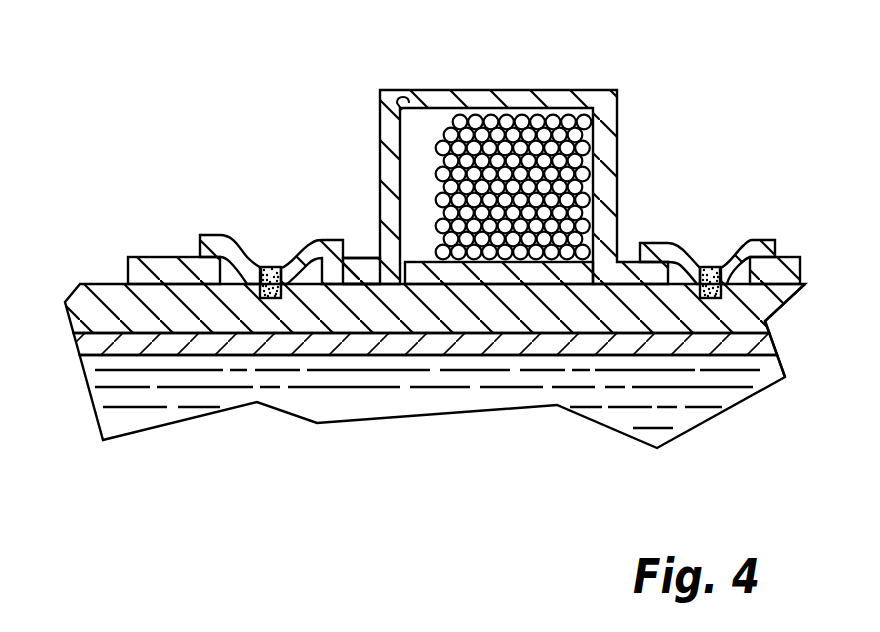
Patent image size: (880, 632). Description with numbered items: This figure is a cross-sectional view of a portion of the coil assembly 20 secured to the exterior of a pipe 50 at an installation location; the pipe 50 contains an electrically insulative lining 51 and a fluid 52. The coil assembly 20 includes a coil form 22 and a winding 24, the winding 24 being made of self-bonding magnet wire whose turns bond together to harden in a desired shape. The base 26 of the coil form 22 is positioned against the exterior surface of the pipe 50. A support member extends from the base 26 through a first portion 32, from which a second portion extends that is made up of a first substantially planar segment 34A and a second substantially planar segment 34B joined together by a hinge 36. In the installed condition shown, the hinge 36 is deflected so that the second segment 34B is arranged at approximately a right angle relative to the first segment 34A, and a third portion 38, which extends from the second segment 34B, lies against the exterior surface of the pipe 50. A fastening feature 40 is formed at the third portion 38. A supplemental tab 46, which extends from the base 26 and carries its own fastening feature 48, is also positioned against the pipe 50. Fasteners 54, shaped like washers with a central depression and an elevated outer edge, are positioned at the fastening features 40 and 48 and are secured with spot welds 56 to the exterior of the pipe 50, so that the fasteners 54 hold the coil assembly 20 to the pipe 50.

The coil assembly 20 is at (524, 143).
The coil form 22 is at (491, 80).
The winding 24 is at (558, 133).
The base 26 is at (558, 277).
The first portion 32 is at (598, 178).
The first substantially planar segment 34A is at (452, 97).
The second substantially planar segment 34B is at (383, 174).
The hinge 36 is at (380, 90).
The third portion 38 is at (188, 263).
The fastening feature 40 is at (300, 262).
The supplemental tab 46 is at (797, 262).
The fastening feature 48 is at (778, 313).
The pipe 50 is at (90, 306).
The electrically insulative lining 51 is at (83, 342).
The fluid 52 is at (113, 415).
The fastener 54 is at (215, 236).
The spot weld 56 is at (275, 268).